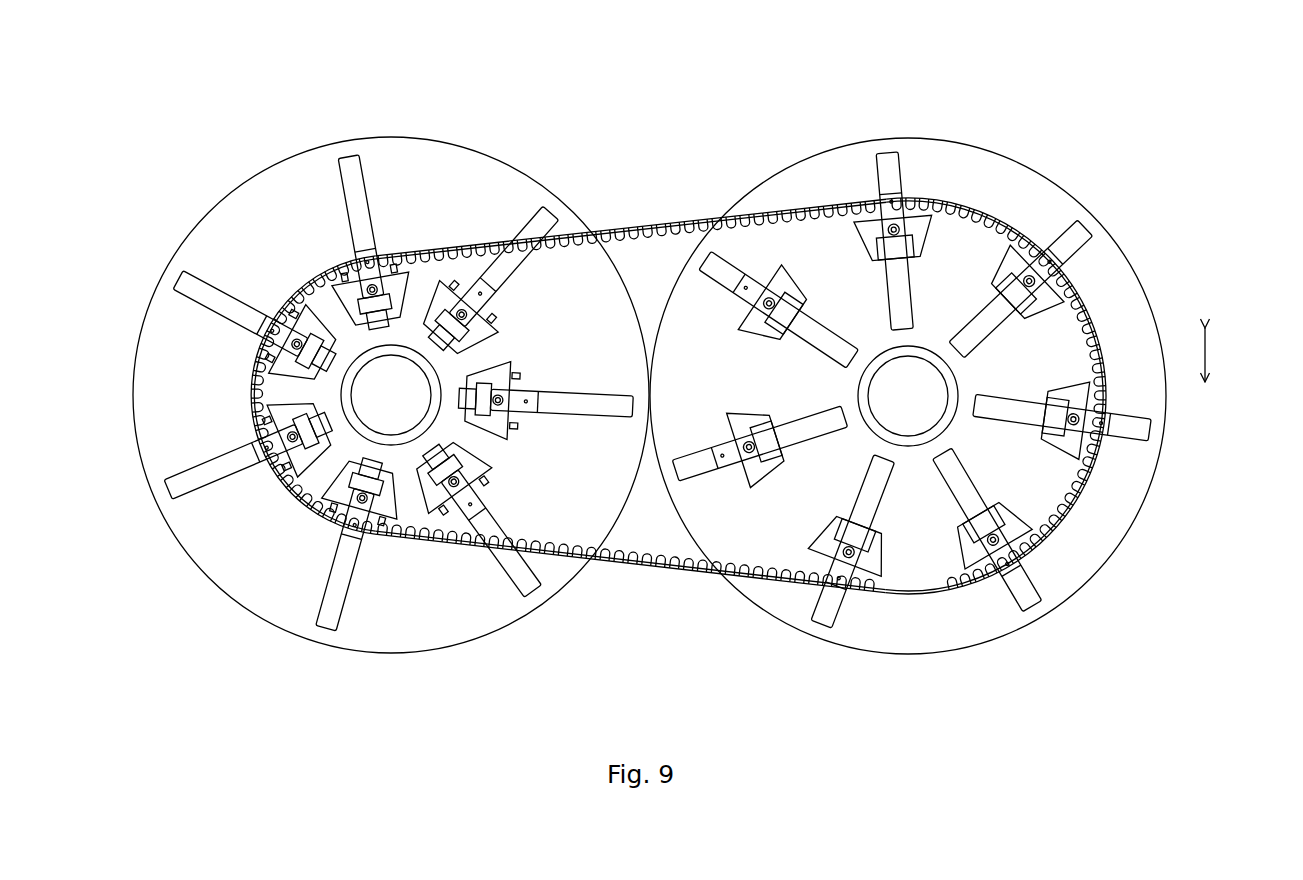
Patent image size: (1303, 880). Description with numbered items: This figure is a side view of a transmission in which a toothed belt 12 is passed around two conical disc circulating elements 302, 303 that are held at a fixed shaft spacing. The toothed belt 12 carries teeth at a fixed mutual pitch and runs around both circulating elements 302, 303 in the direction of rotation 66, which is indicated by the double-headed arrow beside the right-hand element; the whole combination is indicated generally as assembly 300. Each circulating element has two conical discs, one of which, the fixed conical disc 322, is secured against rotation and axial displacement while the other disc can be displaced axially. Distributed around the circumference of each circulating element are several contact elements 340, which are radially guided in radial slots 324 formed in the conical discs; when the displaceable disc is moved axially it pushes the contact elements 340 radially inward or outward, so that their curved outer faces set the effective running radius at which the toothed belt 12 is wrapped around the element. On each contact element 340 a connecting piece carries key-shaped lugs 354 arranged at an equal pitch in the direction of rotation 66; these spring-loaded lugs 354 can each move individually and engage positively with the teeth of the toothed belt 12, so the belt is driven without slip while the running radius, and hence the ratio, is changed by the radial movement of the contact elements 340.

The rotary transfer assembly 300 is at (1177, 187).
The conical disc circulating element 302 is at (215, 163).
The conical disc circulating element 303 is at (1097, 95).
The toothed belt 12 is at (660, 220).
The fixed conical disc 322 is at (1040, 197).
The radial slot 324 is at (892, 176).
The contact element 340 is at (523, 358).
The key-shaped lug 354 is at (763, 290).
The direction of rotation 66 is at (1208, 352).